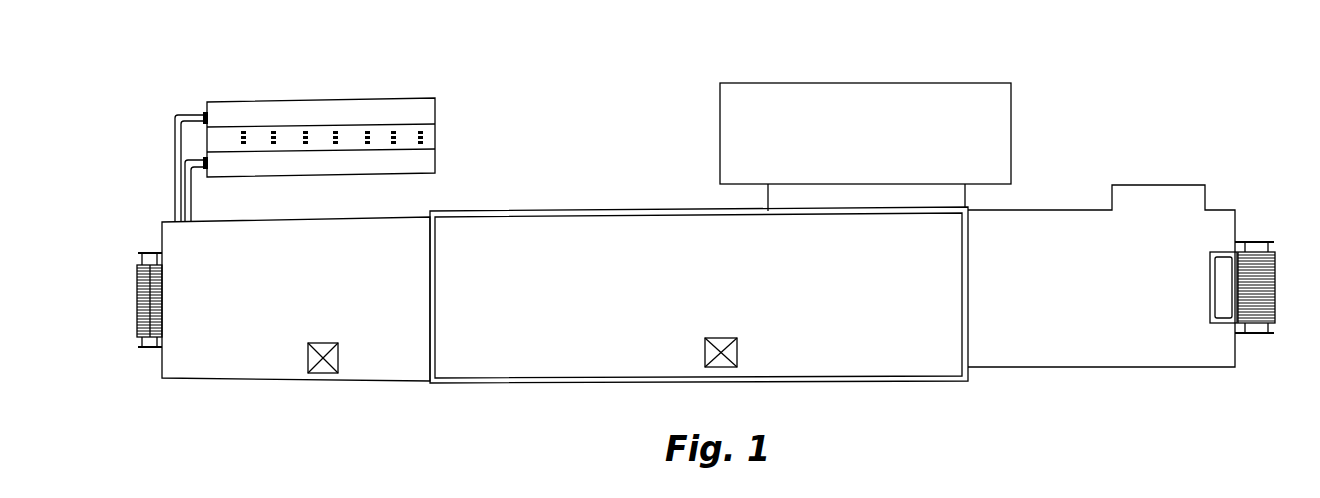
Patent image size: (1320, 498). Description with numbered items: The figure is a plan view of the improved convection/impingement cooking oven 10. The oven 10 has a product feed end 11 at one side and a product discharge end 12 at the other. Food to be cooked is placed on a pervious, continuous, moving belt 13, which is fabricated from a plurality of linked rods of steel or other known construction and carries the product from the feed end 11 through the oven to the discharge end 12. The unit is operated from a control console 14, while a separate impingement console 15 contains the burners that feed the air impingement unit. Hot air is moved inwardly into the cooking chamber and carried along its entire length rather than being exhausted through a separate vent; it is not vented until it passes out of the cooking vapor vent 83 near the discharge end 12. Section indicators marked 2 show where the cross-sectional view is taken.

The convection/impingement oven 10 is at (583, 106).
The control console 14 is at (397, 99).
The impingement console 15 is at (962, 83).
The product feed end 11 is at (137, 307).
The product discharge end 12 is at (1276, 296).
The moving belt 13 is at (137, 336).
The cooking vapor vent 83 is at (1210, 320).
The section line 2- 2 is at (125, 295).